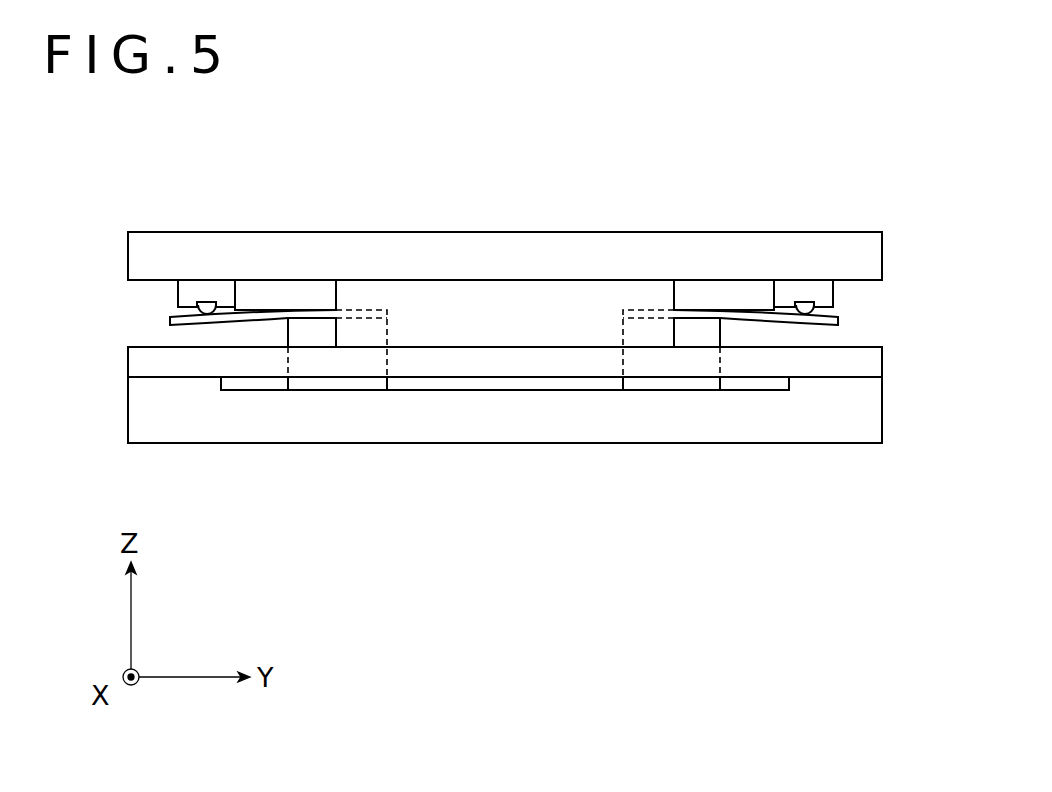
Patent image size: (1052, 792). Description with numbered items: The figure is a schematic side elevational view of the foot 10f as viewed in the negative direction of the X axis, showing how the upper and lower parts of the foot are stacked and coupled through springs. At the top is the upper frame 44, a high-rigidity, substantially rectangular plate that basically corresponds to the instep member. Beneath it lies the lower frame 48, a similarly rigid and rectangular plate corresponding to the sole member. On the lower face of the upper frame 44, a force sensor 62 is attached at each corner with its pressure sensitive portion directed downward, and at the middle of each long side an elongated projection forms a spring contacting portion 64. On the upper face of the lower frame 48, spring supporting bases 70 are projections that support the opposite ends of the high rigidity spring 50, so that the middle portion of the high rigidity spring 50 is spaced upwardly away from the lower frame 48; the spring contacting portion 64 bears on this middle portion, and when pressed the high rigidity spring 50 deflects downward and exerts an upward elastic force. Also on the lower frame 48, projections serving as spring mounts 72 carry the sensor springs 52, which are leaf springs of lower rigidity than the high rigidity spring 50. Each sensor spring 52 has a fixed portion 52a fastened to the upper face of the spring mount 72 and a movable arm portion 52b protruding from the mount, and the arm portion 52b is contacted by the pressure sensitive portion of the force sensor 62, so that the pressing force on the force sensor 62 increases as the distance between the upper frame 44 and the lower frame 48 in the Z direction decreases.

The foot 10f is at (875, 173).
The upper frame 44 is at (870, 255).
The lower frame 48 is at (507, 428).
The high rigidity spring 50 is at (870, 353).
The sensor spring 52 is at (511, 279).
The fixed portion 52a is at (320, 308).
The arm portion 52b is at (260, 310).
The force sensor 62 is at (190, 295).
The spring contacting portion 64 is at (675, 302).
The spring supporting base 70 is at (148, 387).
The spring mount 72 is at (287, 333).